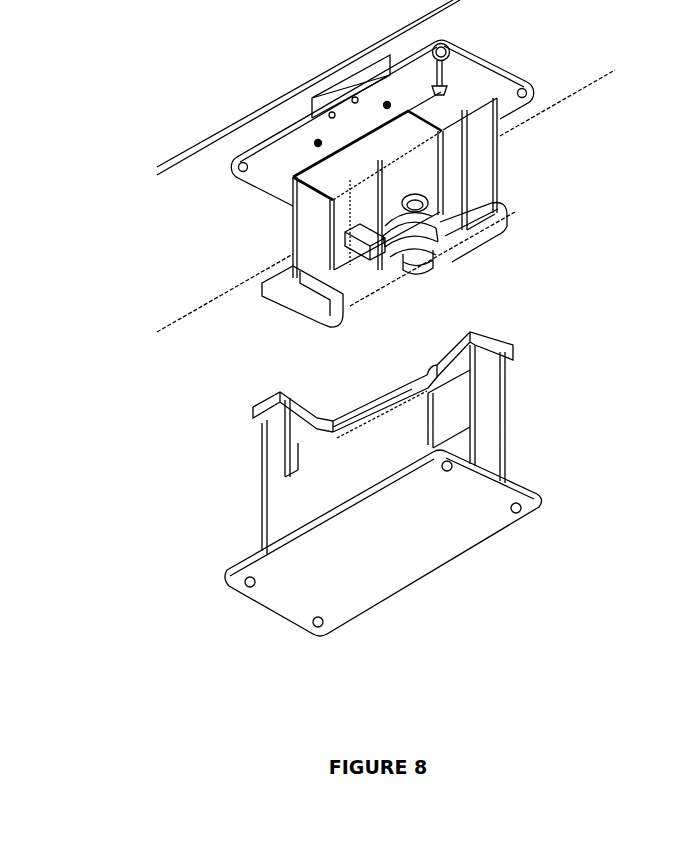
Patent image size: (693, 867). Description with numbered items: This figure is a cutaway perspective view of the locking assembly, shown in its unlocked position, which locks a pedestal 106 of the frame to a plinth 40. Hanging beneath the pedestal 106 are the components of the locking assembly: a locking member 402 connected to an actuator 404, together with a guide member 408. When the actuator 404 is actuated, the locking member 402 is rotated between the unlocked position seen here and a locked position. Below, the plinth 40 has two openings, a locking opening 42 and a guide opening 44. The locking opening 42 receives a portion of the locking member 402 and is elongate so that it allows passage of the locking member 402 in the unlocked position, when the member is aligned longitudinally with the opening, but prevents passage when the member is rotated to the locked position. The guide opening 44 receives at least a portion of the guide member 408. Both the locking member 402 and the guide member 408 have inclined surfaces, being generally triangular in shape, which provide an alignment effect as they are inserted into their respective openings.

The pedestal 106 is at (371, 224).
The locking member 402 is at (433, 262).
The actuator 404 is at (355, 230).
The guide member 408 is at (313, 300).
The plinth 40 is at (390, 468).
The locking opening 42 is at (440, 376).
The guide opening 44 is at (318, 430).